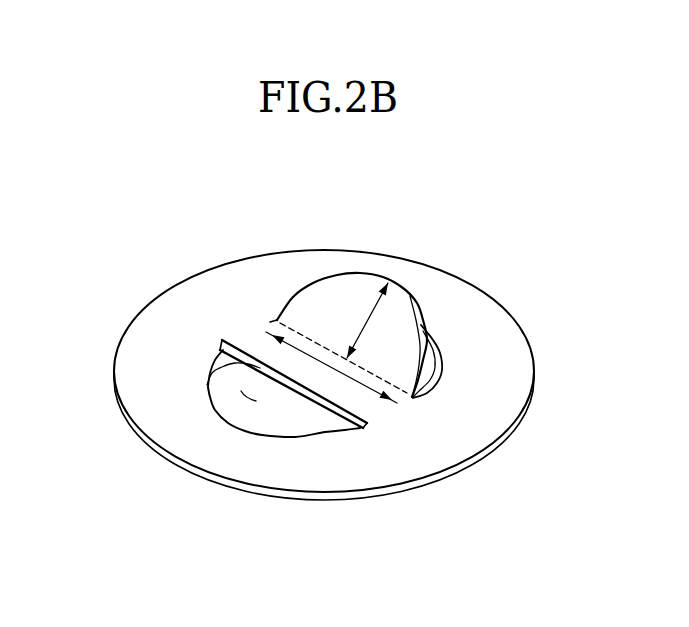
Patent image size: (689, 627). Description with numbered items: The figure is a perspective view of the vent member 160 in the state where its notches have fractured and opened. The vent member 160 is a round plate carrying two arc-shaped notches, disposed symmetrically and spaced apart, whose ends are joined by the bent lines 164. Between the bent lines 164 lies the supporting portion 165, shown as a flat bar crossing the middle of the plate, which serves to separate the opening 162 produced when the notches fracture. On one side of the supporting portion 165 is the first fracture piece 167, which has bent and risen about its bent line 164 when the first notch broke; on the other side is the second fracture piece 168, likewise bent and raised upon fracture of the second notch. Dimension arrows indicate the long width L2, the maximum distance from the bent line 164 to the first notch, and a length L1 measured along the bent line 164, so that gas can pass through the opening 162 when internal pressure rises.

The vent member 160 is at (224, 242).
The opening 162 is at (244, 396).
The bent line 164 is at (310, 330).
The supporting portion 165 is at (325, 371).
The first fracture piece 167 is at (402, 323).
The second fracture piece 168 is at (208, 387).
The groove length L1 is at (364, 388).
The long width L2 is at (372, 320).